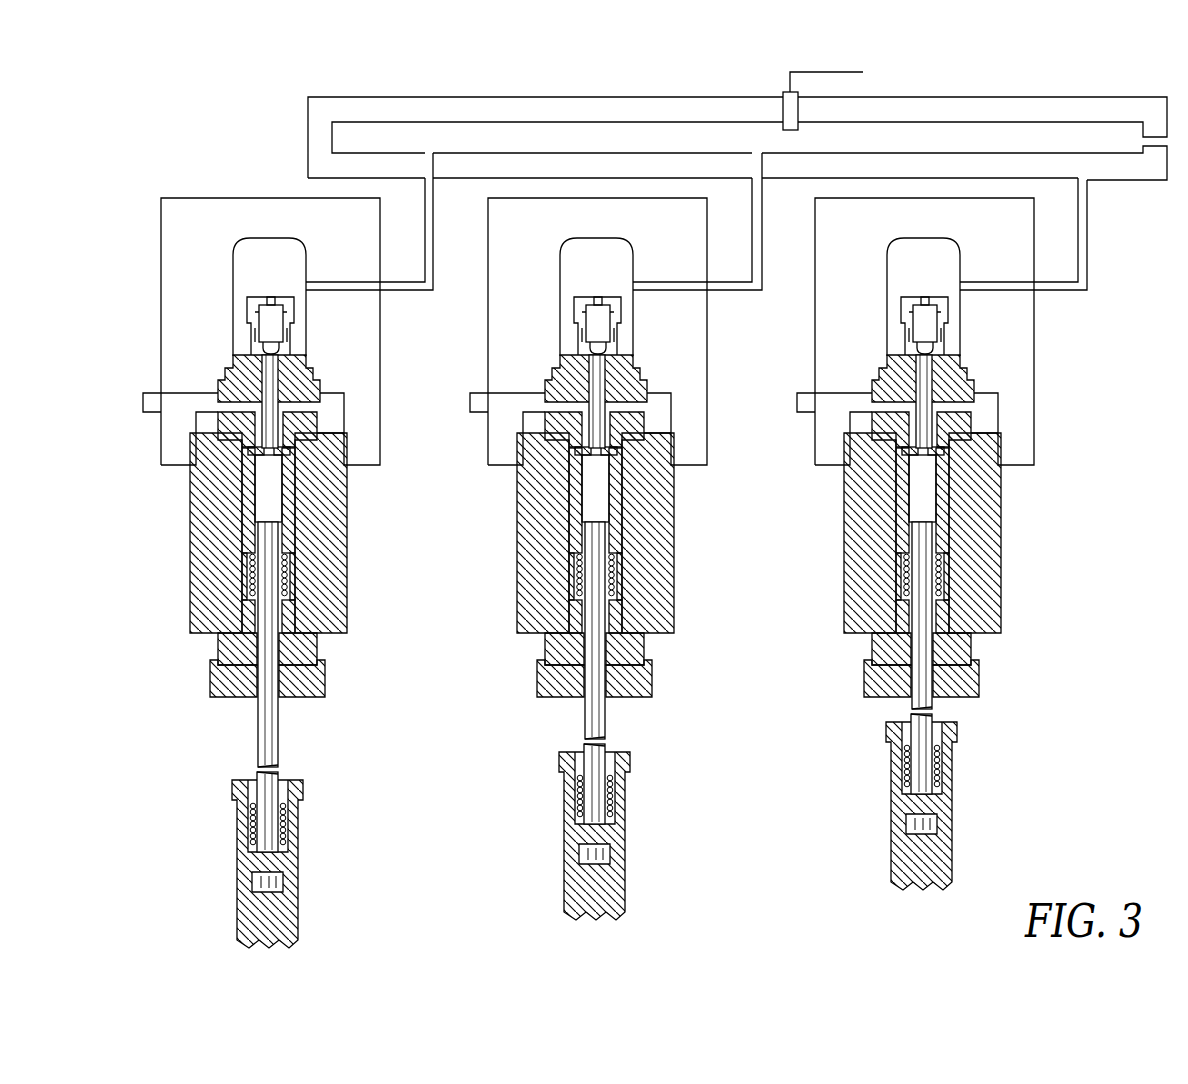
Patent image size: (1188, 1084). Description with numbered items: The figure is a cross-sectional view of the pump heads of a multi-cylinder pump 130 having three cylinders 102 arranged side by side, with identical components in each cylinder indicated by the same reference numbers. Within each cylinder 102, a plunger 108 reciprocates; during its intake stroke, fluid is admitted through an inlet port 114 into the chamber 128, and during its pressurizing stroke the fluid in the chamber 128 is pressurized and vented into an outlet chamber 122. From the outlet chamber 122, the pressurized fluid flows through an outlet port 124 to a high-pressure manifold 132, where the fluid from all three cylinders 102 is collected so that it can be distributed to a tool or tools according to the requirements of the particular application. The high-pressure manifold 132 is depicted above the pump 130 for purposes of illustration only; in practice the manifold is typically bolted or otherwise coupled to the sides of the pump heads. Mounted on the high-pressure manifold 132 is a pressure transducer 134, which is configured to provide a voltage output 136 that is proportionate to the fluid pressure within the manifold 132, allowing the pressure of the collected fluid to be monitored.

The cylinder 102 is at (568, 537).
The plunger 108 is at (268, 713).
The inlet port 114 is at (262, 423).
The outlet chamber 122 is at (255, 277).
The outlet port 124 is at (385, 286).
The chamber 128 is at (265, 508).
The pump 130 is at (627, 507).
The high-pressure manifold 132 is at (345, 138).
The pressure transducer 134 is at (788, 92).
The voltage output 136 is at (863, 72).